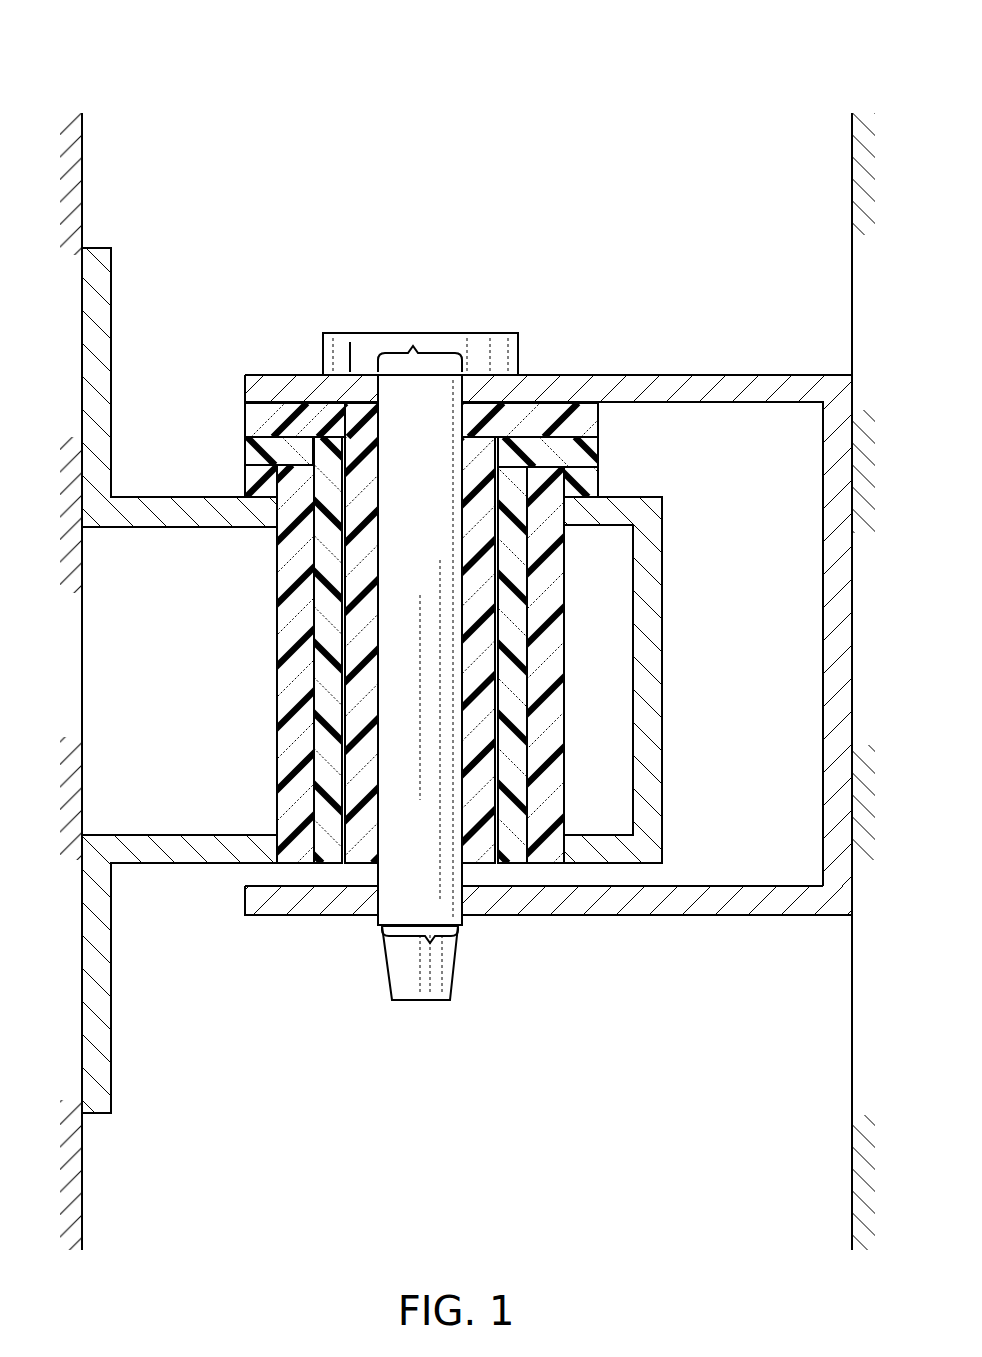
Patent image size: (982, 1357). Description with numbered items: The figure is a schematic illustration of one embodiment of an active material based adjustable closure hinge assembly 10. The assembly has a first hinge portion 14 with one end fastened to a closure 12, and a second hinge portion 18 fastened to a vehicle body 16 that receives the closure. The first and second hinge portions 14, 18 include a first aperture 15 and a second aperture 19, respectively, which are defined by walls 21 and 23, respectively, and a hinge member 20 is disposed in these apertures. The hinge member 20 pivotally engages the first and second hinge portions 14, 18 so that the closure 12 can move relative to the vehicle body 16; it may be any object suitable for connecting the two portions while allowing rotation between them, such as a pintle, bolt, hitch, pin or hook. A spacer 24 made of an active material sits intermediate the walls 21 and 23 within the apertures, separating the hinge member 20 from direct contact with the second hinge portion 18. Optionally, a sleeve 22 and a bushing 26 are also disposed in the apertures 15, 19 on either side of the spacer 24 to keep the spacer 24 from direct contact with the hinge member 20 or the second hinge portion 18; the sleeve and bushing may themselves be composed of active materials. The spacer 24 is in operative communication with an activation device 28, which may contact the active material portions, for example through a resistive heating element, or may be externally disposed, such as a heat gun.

The active material based adjustable closure hinge assembly 10 is at (508, 105).
The closure 12 is at (851, 192).
The first hinge portion 14 is at (672, 376).
The first aperture 15 is at (415, 347).
The vehicle body 16 is at (82, 168).
The second hinge portion 18 is at (196, 497).
The second aperture 19 is at (297, 475).
The hinge member 20 is at (400, 343).
The wall 21 is at (435, 390).
The sleeve 22 is at (262, 425).
The wall 23 is at (298, 540).
The spacer 24 is at (568, 452).
The bushing 26 is at (536, 862).
The activation device 28 is at (345, 868).